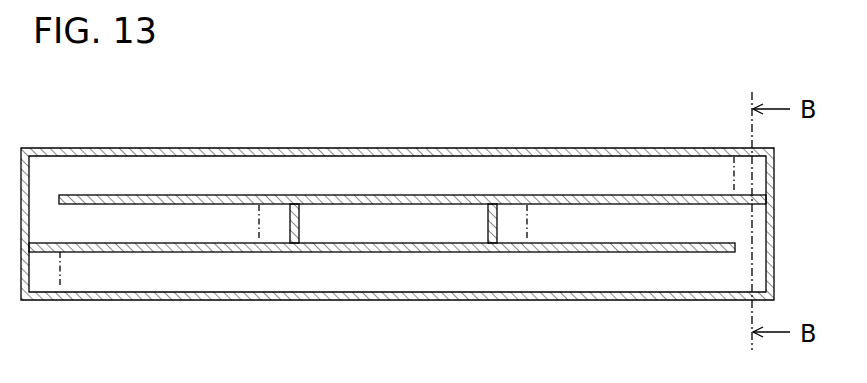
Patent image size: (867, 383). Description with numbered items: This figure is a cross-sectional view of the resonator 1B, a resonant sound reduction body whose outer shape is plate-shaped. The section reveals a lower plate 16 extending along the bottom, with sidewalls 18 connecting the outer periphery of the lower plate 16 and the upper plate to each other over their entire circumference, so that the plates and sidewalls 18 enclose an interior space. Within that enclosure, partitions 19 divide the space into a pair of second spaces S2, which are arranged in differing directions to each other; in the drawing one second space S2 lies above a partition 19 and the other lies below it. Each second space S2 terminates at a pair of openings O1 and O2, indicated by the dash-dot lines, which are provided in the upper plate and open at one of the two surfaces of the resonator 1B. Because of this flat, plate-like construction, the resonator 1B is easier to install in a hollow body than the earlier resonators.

The resonator 1B is at (397, 218).
The lower plate 16 is at (315, 272).
The sidewalls 18 is at (222, 293).
The partitions 19 is at (163, 252).
The second space S2 is at (386, 173).
The opening O1 is at (735, 157).
The opening O2 is at (258, 228).